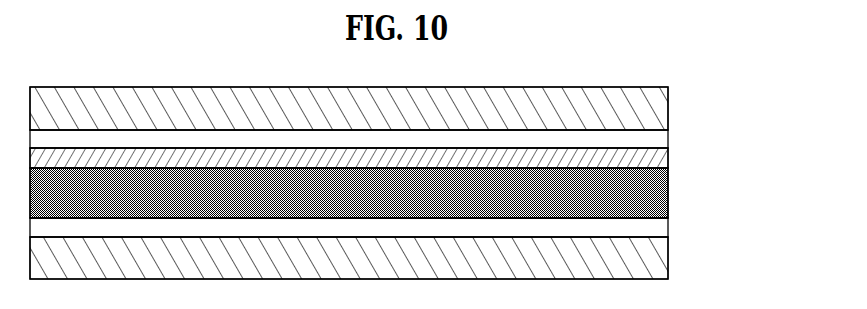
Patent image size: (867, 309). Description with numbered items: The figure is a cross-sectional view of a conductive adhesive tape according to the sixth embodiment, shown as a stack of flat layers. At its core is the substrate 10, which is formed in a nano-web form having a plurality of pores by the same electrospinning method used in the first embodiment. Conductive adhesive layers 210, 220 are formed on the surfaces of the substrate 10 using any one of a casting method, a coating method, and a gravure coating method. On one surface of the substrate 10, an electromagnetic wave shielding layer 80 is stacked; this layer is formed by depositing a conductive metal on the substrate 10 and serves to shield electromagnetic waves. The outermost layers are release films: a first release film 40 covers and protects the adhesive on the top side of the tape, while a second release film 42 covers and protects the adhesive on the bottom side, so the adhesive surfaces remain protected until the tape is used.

The first release film 40 is at (660, 103).
The conductive adhesive layer 220 is at (660, 140).
The electromagnetic wave shielding layer 80 is at (660, 161).
The substrate 10 is at (668, 197).
The conductive adhesive layer 210 is at (660, 230).
The second release film 42 is at (660, 263).